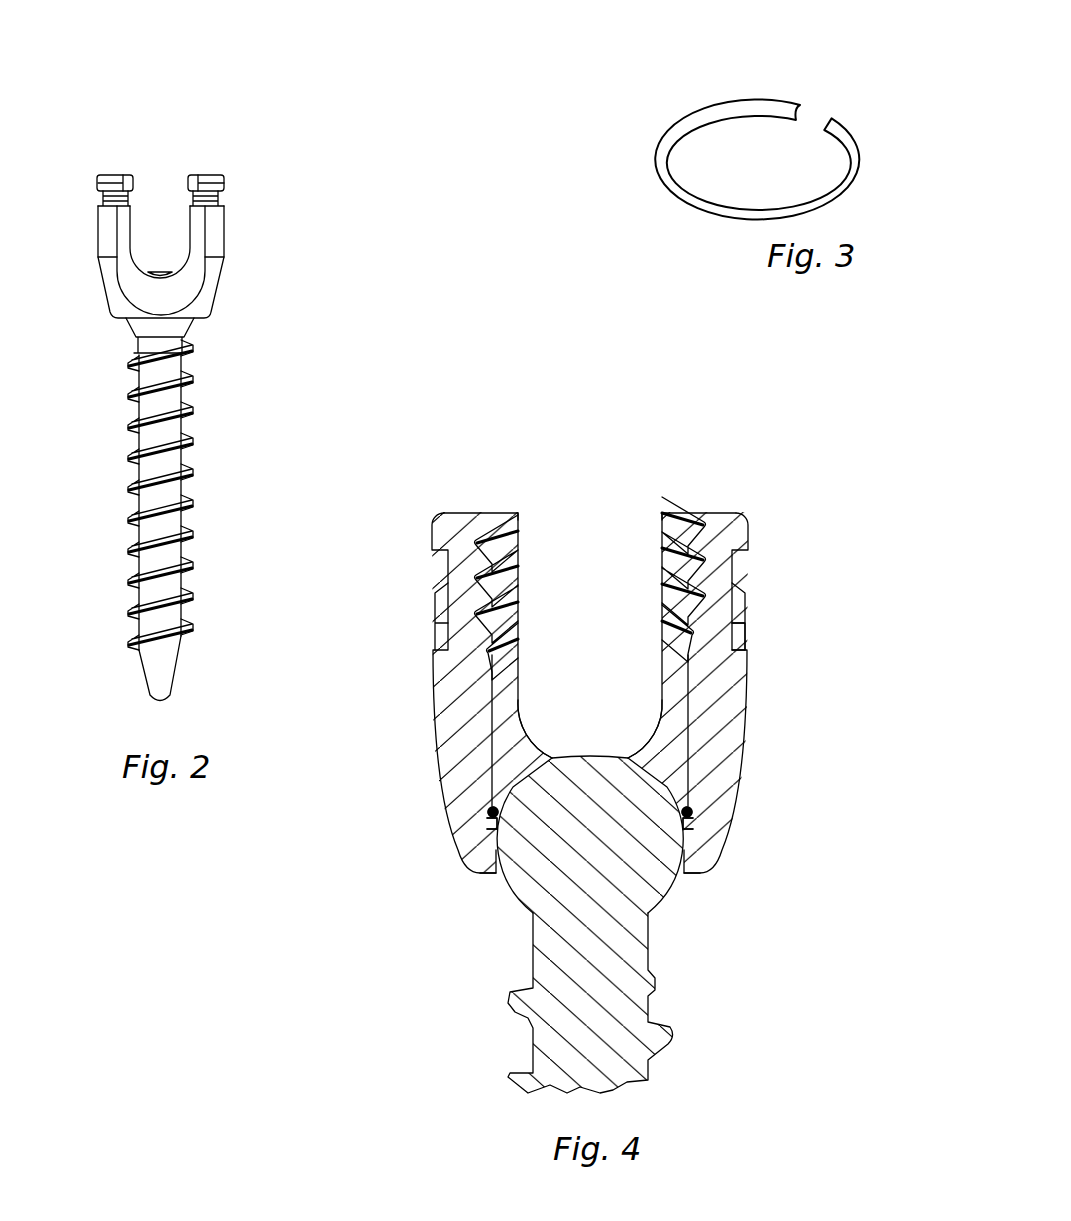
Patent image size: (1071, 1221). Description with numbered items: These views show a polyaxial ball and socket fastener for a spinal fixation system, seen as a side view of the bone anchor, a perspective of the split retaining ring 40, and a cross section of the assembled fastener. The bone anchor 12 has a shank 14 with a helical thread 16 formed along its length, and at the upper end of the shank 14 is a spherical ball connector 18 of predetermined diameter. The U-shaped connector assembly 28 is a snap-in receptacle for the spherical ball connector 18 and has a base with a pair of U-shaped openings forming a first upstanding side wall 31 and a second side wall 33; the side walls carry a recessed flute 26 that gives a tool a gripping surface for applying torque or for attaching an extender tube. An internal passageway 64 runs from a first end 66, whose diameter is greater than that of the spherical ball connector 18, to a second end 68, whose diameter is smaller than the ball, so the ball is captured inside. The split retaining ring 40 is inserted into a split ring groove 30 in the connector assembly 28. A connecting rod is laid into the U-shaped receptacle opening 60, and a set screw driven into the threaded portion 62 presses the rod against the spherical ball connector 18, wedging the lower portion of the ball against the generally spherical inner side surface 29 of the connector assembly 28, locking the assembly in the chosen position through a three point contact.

In FIG. 2, the bone anchor 12 is at (193, 434).
In FIG. 2, the shank 14 is at (230, 520).
In FIG. 4, the shank 14 is at (650, 930).
In FIG. 2, the helical thread 16 is at (187, 553).
In FIG. 4, the spherical ball connector 18 is at (668, 895).
In FIG. 4, the recessed flute 26 is at (735, 633).
In FIG. 2, the U-shaped connector assembly 28 is at (193, 260).
In FIG. 4, the U-shaped connector assembly 28 is at (639, 673).
In FIG. 2, the inner side surface 29 is at (180, 280).
In FIG. 4, the split ring groove 30 is at (694, 818).
In FIG. 2, the first upstanding side wall 31 is at (93, 217).
In FIG. 2, the second side wall 33 is at (225, 205).
In FIG. 3, the split retaining ring 40 is at (718, 100).
In FIG. 4, the split retaining ring 40 is at (695, 809).
In FIG. 4, the U-shaped receptacle opening 60 is at (657, 724).
In FIG. 4, the threaded portion 62 is at (668, 532).
In FIG. 4, the internal passageway 64 is at (585, 620).
In FIG. 4, the first end 66 is at (478, 513).
In FIG. 4, the second end 68 is at (500, 877).